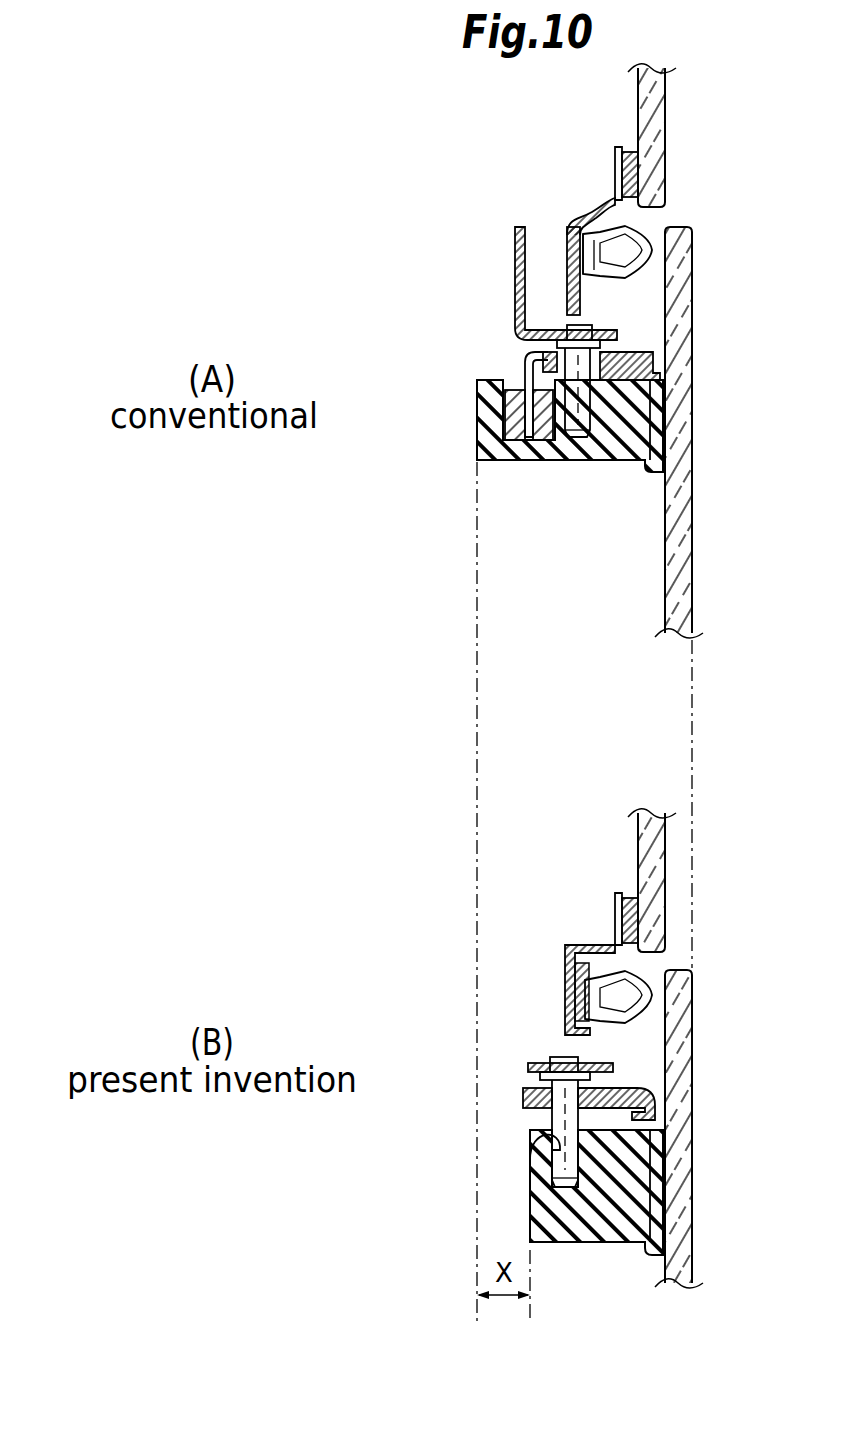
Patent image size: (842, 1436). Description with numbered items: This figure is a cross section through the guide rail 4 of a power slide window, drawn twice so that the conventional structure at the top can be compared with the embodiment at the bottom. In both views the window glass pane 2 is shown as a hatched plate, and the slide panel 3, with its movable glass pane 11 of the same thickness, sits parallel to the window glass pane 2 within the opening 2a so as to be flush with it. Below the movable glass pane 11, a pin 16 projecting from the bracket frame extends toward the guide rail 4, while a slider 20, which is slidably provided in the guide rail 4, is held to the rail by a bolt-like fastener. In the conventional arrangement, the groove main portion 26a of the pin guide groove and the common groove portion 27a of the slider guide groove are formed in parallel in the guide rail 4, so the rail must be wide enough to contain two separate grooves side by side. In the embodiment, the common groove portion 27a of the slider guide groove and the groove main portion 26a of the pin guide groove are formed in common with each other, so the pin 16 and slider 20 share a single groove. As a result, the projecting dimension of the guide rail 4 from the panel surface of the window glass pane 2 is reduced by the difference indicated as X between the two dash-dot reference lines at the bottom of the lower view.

The window glass pane 2 is at (690, 407).
The opening 2a is at (665, 595).
The slide panel 3 is at (672, 103).
The guide rail 4 is at (640, 445).
The movable glass pane 11 is at (666, 148).
The pin 16 is at (571, 333).
The slider 20 is at (517, 352).
The groove main portion 26a is at (571, 445).
The common groove portion 27a is at (517, 462).